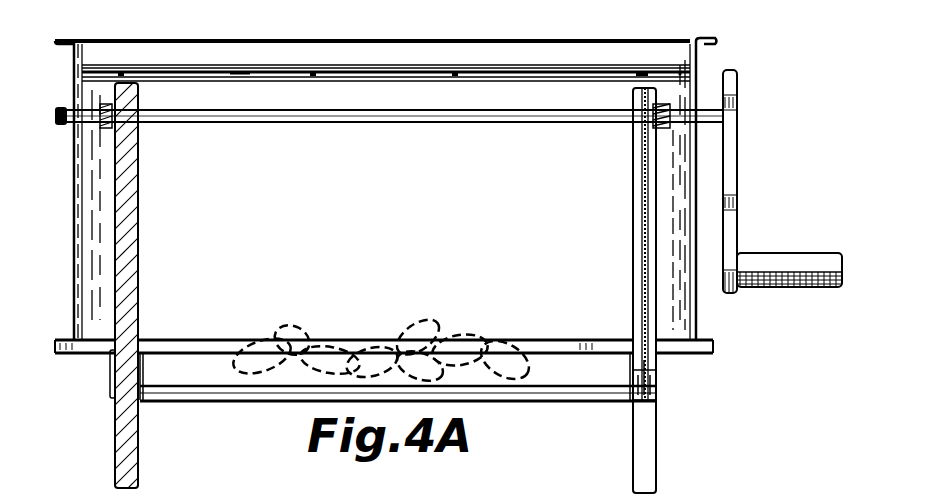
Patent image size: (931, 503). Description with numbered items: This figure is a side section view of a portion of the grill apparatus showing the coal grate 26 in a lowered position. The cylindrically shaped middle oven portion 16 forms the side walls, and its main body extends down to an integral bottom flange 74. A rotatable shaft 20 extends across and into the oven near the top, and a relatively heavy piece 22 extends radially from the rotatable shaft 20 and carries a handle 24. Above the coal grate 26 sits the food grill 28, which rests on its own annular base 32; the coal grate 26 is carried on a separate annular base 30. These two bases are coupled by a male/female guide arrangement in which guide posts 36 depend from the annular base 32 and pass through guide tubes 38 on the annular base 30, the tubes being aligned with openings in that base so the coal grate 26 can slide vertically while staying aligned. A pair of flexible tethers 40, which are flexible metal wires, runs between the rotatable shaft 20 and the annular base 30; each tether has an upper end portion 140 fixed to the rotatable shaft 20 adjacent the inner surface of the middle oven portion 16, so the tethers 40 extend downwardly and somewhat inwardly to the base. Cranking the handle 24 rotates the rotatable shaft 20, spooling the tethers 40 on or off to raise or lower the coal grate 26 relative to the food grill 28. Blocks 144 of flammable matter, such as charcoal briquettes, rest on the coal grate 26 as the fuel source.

The middle oven portion 16 is at (74, 222).
The rotatable shaft 20 is at (377, 110).
The relatively heavy piece 22 is at (737, 166).
The handle 24 is at (784, 253).
The coal grate 26 is at (215, 366).
The food grill 28 is at (492, 65).
The annular base 30 is at (172, 401).
The annular base 32 is at (228, 86).
The guide posts 36 is at (633, 95).
The guide tubes 38 is at (110, 372).
The flexible tethers 40 is at (643, 222).
The bottom flange 74 is at (560, 338).
The upper end portion 140 is at (105, 108).
The block of flammable matter 144 is at (298, 330).